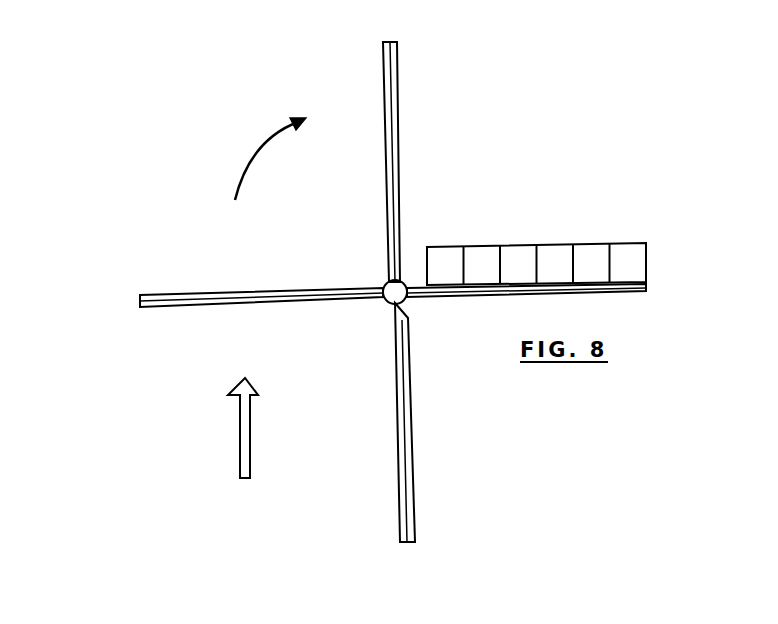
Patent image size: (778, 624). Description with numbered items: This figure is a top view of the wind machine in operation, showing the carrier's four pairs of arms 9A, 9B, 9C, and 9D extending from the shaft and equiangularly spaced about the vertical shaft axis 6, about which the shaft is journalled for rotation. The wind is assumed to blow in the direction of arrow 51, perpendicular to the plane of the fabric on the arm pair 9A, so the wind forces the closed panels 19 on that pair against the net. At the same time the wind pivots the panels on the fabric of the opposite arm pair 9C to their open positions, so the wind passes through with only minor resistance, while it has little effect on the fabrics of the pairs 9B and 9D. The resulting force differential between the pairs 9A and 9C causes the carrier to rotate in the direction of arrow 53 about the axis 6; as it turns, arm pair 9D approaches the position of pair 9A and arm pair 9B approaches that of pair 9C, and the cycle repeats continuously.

The vertical axis 6 is at (392, 296).
The pair of arms 9A is at (135, 302).
The pair of arms 9B is at (393, 38).
The pair of arms 9C is at (660, 289).
The pair of arms 9D is at (385, 515).
The panels 19 is at (515, 238).
The wind direction arrow 51 is at (240, 453).
The carrier rotation arrow 53 is at (250, 162).